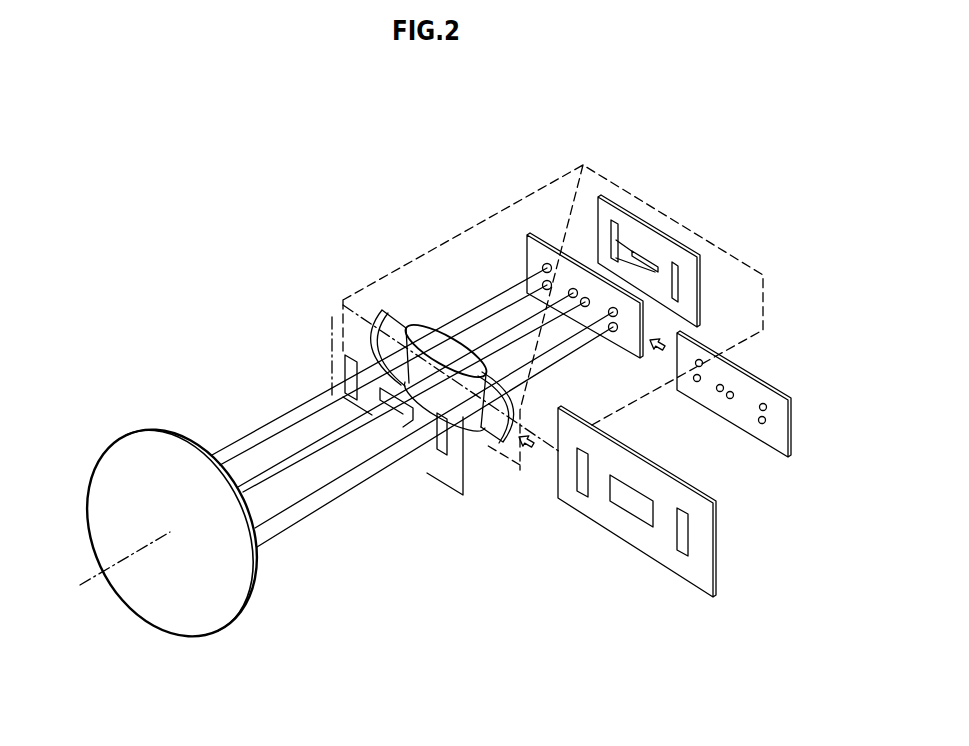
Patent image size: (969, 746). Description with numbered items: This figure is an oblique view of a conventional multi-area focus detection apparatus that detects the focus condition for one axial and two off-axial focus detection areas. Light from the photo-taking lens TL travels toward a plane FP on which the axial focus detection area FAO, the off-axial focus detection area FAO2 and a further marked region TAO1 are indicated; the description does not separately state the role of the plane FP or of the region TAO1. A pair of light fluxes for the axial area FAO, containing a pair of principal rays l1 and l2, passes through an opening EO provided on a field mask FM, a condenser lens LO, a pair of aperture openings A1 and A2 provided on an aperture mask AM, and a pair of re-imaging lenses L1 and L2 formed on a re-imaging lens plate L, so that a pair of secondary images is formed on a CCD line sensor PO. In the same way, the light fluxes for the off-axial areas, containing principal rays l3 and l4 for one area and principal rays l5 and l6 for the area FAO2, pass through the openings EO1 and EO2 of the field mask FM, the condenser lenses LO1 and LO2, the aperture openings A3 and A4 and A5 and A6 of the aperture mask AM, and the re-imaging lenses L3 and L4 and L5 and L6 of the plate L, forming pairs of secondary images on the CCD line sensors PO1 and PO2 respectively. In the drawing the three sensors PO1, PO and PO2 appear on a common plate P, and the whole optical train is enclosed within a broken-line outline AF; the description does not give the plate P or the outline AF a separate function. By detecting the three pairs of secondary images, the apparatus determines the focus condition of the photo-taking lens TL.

The photo-taking lens TL is at (130, 437).
The principal ray l1 is at (287, 459).
The principal ray l2 is at (296, 463).
The principal ray l3 is at (244, 450).
The principal ray l4 is at (241, 440).
The principal ray l5 is at (288, 528).
The principal ray l6 is at (265, 522).
The tab of focusing plate TAO1 is at (345, 364).
The predetermined focal plane FP is at (332, 317).
The condenser lens LO1 is at (395, 308).
The condenser lens LO is at (440, 326).
The condenser lens LO2 is at (497, 442).
The re-imaging lens plate L is at (527, 237).
The auto-focus module AF is at (526, 193).
The plate P is at (600, 198).
The CCD line sensor PO1 is at (610, 222).
The CCD line sensor PO is at (652, 256).
The CCD line sensor PO2 is at (680, 283).
The re-imaging lens L1 is at (583, 308).
The re-imaging lens L2 is at (568, 296).
The re-imaging lens L3 is at (549, 262).
The re-imaging lens L4 is at (543, 282).
The re-imaging lens L5 is at (617, 318).
The re-imaging lens L6 is at (612, 332).
The axial focus detection area FAO is at (398, 428).
The off-axial focus detection area FAO2 is at (432, 405).
The aperture mask AM is at (752, 437).
The aperture opening A1 is at (735, 394).
The aperture opening A2 is at (719, 393).
The aperture opening A3 is at (705, 362).
The aperture opening A4 is at (696, 383).
The aperture opening A5 is at (768, 409).
The aperture opening A6 is at (764, 425).
The field mask FM is at (702, 495).
The opening EO is at (632, 517).
The opening EO1 is at (582, 497).
The opening EO2 is at (683, 556).